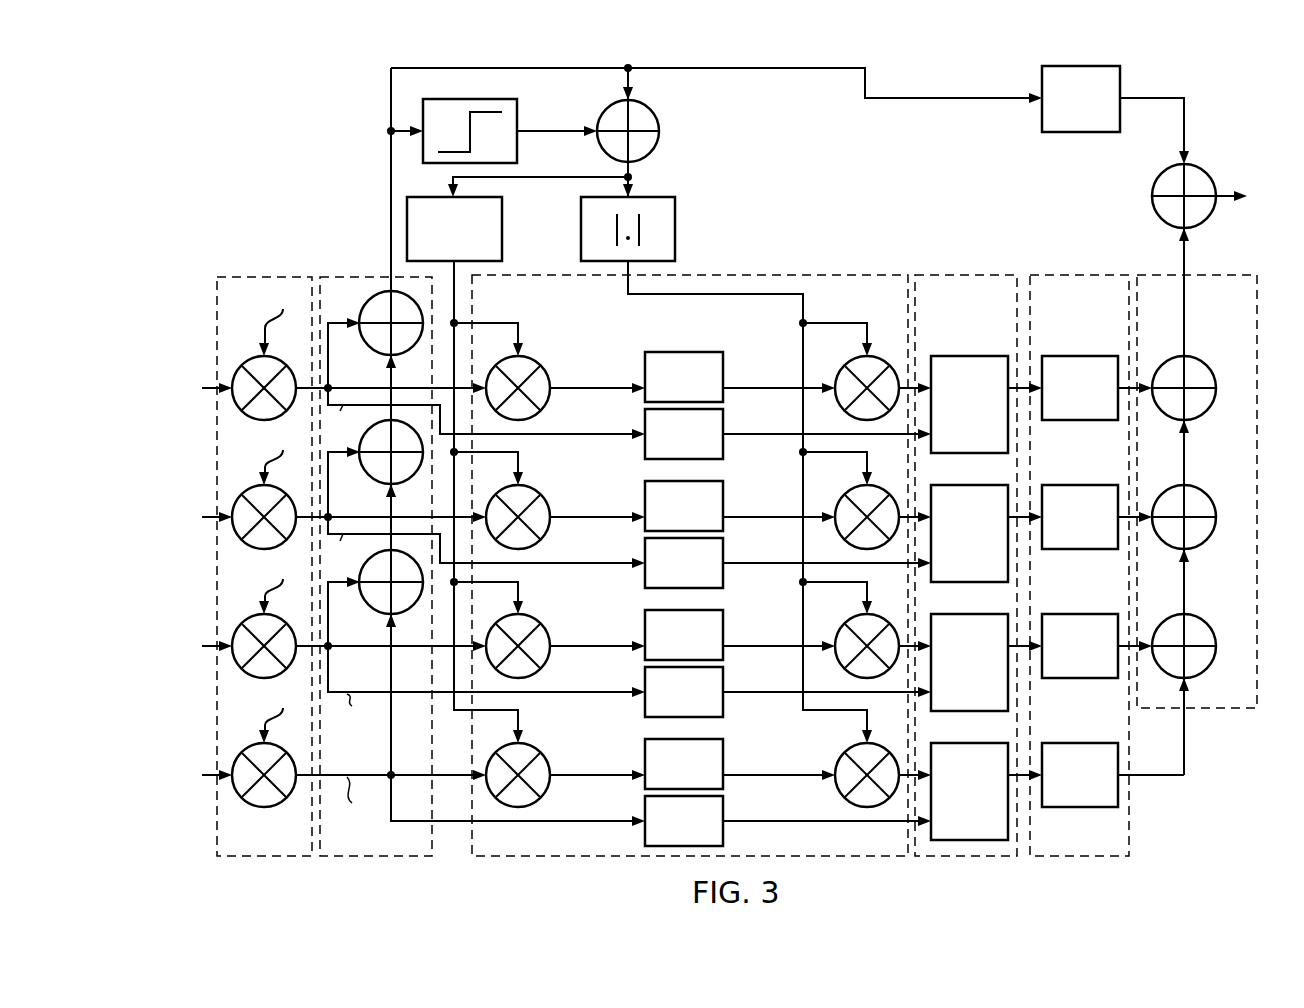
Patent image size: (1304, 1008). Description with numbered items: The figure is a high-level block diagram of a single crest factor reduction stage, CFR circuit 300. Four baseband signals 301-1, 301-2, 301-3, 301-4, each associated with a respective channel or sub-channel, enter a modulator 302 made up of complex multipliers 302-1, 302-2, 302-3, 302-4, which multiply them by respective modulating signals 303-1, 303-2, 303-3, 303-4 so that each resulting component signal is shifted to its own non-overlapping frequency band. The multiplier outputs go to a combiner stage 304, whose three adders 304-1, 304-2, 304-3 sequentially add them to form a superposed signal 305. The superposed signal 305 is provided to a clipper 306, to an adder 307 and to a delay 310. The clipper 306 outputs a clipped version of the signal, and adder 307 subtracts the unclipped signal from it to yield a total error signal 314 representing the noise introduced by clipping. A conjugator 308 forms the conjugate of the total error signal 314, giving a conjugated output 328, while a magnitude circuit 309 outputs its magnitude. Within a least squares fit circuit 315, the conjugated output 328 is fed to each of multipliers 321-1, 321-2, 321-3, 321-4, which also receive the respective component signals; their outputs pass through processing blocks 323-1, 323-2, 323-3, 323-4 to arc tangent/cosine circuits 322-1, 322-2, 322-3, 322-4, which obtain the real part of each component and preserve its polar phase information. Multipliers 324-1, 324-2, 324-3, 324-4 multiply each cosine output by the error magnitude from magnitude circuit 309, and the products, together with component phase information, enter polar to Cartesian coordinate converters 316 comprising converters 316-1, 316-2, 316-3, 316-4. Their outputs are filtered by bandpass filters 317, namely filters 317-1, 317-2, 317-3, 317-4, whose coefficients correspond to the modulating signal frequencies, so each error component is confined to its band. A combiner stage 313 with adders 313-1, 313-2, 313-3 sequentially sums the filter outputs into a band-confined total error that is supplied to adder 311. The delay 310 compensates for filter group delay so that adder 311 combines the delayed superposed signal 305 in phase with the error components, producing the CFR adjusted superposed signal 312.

The CFR circuit 300 is at (215, 155).
The baseband signal 301-1 is at (202, 397).
The baseband signal 301-2 is at (202, 526).
The baseband signal 301-3 is at (202, 655).
The baseband signal 301-4 is at (202, 784).
The modulator 302 is at (290, 276).
The complex multiplier 302-1 is at (238, 367).
The complex multiplier 302-2 is at (238, 496).
The complex multiplier 302-3 is at (238, 625).
The complex multiplier 302-4 is at (238, 754).
The modulating signal 303-1 is at (303, 307).
The modulating signal 303-2 is at (303, 448).
The modulating signal 303-3 is at (303, 577).
The modulating signal 303-4 is at (303, 706).
The combiner stage 304 is at (378, 276).
The adder 304-1 is at (382, 383).
The adder 304-2 is at (382, 512).
The adder 304-3 is at (382, 642).
The superposed signal 305 is at (390, 128).
The clipper 306 is at (551, 95).
The adder 307 is at (692, 111).
The conjugator 308 is at (542, 209).
The magnitude circuit 309 is at (709, 191).
The delay 310 is at (1169, 79).
The adder 311 is at (1241, 152).
The CFR adjusted superposed signal 312 is at (1281, 175).
The combiner stage 313 is at (1241, 253).
The adder 313-1 is at (1248, 335).
The adder 313-2 is at (1248, 464).
The adder 313-3 is at (1248, 589).
The total error signal 314 is at (566, 161).
The least squares fit circuit 315 is at (821, 247).
The polar to Cartesian coordinate converters 316 is at (1011, 253).
The polar to Cartesian coordinate converter 316-1 is at (944, 413).
The polar to Cartesian coordinate converter 316-2 is at (944, 542).
The polar to Cartesian coordinate converter 316-3 is at (944, 671).
The polar to Cartesian coordinate converter 316-4 is at (944, 800).
The bandpass filters 317 is at (1129, 253).
The bandpass filter 317-1 is at (1055, 397).
The bandpass filter 317-2 is at (1055, 526).
The bandpass filter 317-3 is at (1055, 655).
The bandpass filter 317-4 is at (1055, 784).
The multiplier 321-1 is at (588, 342).
The multiplier 321-2 is at (588, 464).
The multiplier 321-3 is at (588, 593).
The multiplier 321-4 is at (588, 722).
The arc tangent/cosine circuit 322-1 is at (659, 443).
The arc tangent/cosine circuit 322-2 is at (659, 572).
The arc tangent/cosine circuit 322-3 is at (659, 701).
The arc tangent/cosine circuit 322-4 is at (659, 830).
The processing block 323-1 is at (659, 386).
The processing block 323-2 is at (659, 515).
The processing block 323-3 is at (659, 644).
The processing block 323-4 is at (659, 773).
The multiplier 324-1 is at (858, 349).
The multiplier 324-2 is at (858, 478).
The multiplier 324-3 is at (858, 607).
The multiplier 324-4 is at (838, 763).
The conjugated output 328 is at (462, 273).